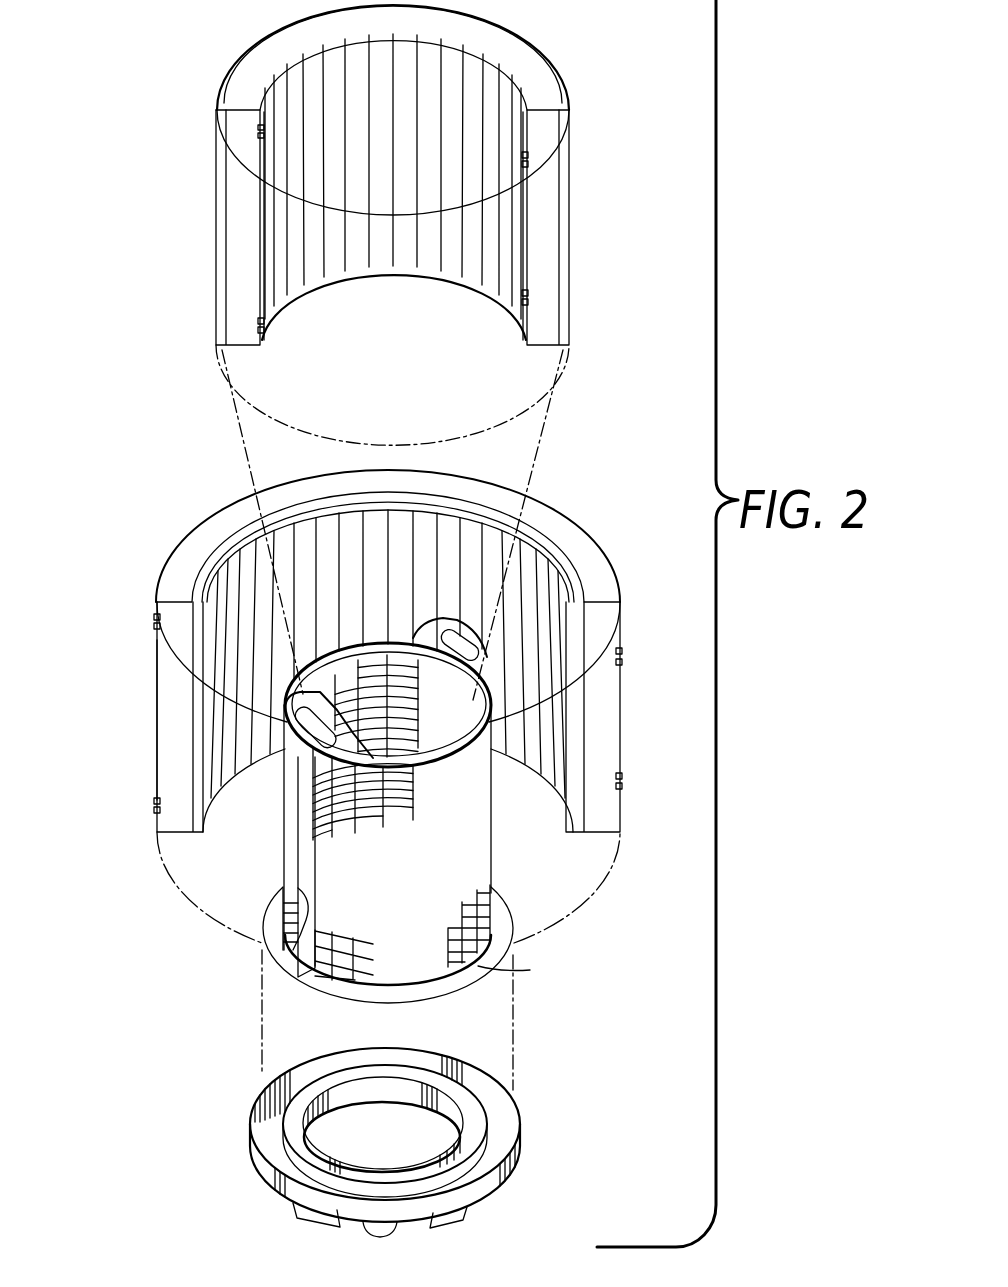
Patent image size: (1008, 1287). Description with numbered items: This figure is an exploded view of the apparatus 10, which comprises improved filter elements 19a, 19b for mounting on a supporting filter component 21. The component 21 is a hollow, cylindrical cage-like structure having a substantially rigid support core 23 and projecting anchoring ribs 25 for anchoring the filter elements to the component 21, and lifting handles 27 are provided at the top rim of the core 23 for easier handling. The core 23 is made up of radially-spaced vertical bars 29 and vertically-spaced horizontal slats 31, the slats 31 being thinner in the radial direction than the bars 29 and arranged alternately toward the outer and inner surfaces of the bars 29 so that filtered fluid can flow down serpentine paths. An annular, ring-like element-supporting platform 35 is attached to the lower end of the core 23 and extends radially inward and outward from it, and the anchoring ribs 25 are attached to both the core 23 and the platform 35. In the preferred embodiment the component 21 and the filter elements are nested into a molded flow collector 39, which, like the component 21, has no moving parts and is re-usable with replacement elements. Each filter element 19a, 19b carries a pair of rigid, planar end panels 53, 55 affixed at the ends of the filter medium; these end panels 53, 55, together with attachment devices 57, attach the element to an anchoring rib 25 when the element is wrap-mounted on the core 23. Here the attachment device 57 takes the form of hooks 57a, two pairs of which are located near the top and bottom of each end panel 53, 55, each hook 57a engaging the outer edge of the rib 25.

The apparatus 10 is at (140, 498).
The filter element 19a is at (238, 516).
The filter element 19b is at (262, 72).
The supporting filter component 21 is at (497, 794).
The support core 23 is at (490, 893).
The anchoring rib 25 is at (288, 946).
The lifting handle 27 is at (447, 632).
The vertical bar 29 is at (325, 817).
The horizontal slat 31 is at (347, 967).
The element-supporting platform 35 is at (480, 963).
The flow collector 39 is at (250, 1152).
The end panel 53 is at (165, 690).
The end panel 55 is at (603, 704).
The attachment device 57 is at (130, 596).
The hook 57a is at (520, 306).